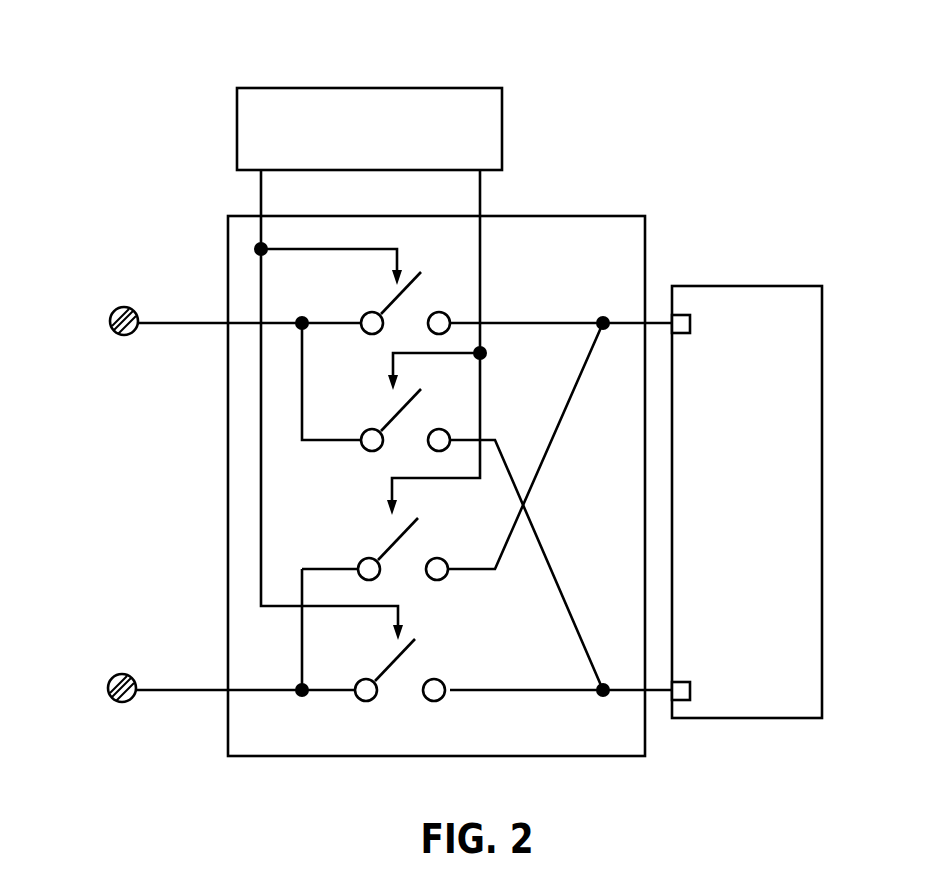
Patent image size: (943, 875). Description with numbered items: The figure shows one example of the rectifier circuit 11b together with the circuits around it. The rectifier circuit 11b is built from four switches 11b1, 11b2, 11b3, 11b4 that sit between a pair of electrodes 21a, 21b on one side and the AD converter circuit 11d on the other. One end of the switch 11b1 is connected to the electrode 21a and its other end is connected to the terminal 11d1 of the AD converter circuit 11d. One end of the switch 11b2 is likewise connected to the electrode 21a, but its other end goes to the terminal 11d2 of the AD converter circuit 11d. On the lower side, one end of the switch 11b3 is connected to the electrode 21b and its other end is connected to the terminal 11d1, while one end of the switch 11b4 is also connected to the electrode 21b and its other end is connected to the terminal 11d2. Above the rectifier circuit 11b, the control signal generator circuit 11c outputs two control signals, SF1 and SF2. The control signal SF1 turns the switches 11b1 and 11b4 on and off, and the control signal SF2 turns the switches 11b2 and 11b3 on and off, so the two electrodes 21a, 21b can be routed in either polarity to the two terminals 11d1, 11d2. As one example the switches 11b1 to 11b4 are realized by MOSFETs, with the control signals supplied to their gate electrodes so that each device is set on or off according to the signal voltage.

The control signal generator circuit 11c is at (382, 88).
The rectifier circuit 11b is at (587, 216).
The switch 11b1 is at (388, 306).
The switch 11b2 is at (388, 422).
The switch 11b3 is at (386, 550).
The switch 11b4 is at (390, 662).
The AD converter circuit 11d is at (733, 286).
The terminal 11d1 is at (676, 315).
The terminal 11d2 is at (683, 702).
The electrode 21a is at (115, 305).
The electrode 21b is at (112, 675).